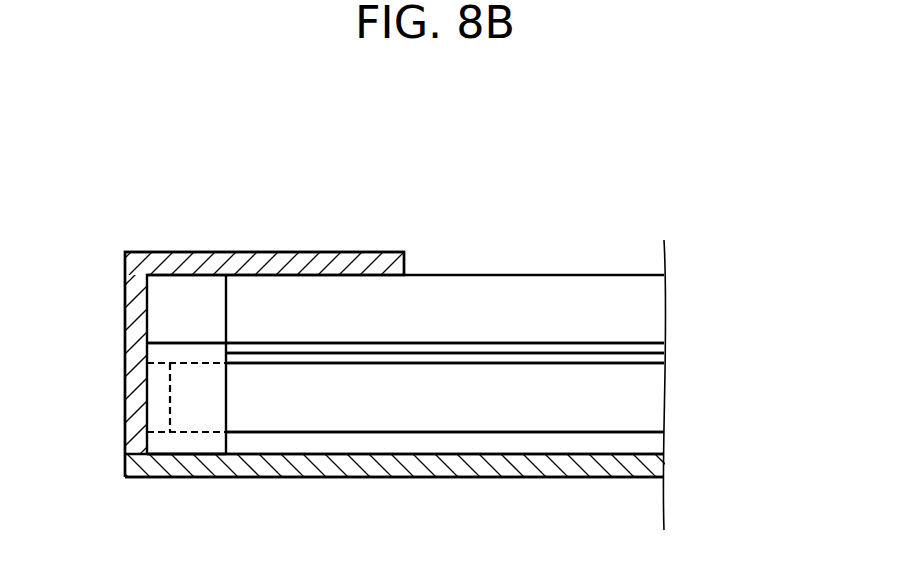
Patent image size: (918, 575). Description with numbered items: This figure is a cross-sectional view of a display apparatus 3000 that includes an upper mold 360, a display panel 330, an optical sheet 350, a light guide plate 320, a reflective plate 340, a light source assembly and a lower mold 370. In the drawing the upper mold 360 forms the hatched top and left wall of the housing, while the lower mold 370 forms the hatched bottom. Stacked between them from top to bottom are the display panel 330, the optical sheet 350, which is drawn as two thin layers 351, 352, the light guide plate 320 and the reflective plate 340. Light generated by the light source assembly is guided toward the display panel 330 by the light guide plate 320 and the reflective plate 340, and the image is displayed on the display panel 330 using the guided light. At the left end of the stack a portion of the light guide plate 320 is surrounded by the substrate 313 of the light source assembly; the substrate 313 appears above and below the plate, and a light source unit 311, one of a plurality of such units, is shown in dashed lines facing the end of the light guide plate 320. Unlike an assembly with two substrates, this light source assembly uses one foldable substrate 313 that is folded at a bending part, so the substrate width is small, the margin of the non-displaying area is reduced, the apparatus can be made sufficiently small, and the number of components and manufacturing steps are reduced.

The display apparatus 3000 is at (478, 193).
The upper mold 360 is at (133, 297).
The lower mold 370 is at (655, 465).
The display panel 330 is at (654, 306).
The optical sheet 350 is at (519, 359).
The first sheet of optical sheet 351 is at (656, 344).
The second sheet of optical sheet 352 is at (656, 359).
The light guide plate 320 is at (654, 404).
The reflective plate 340 is at (654, 439).
The light source unit 311 is at (186, 391).
The substrate 313 is at (152, 345).